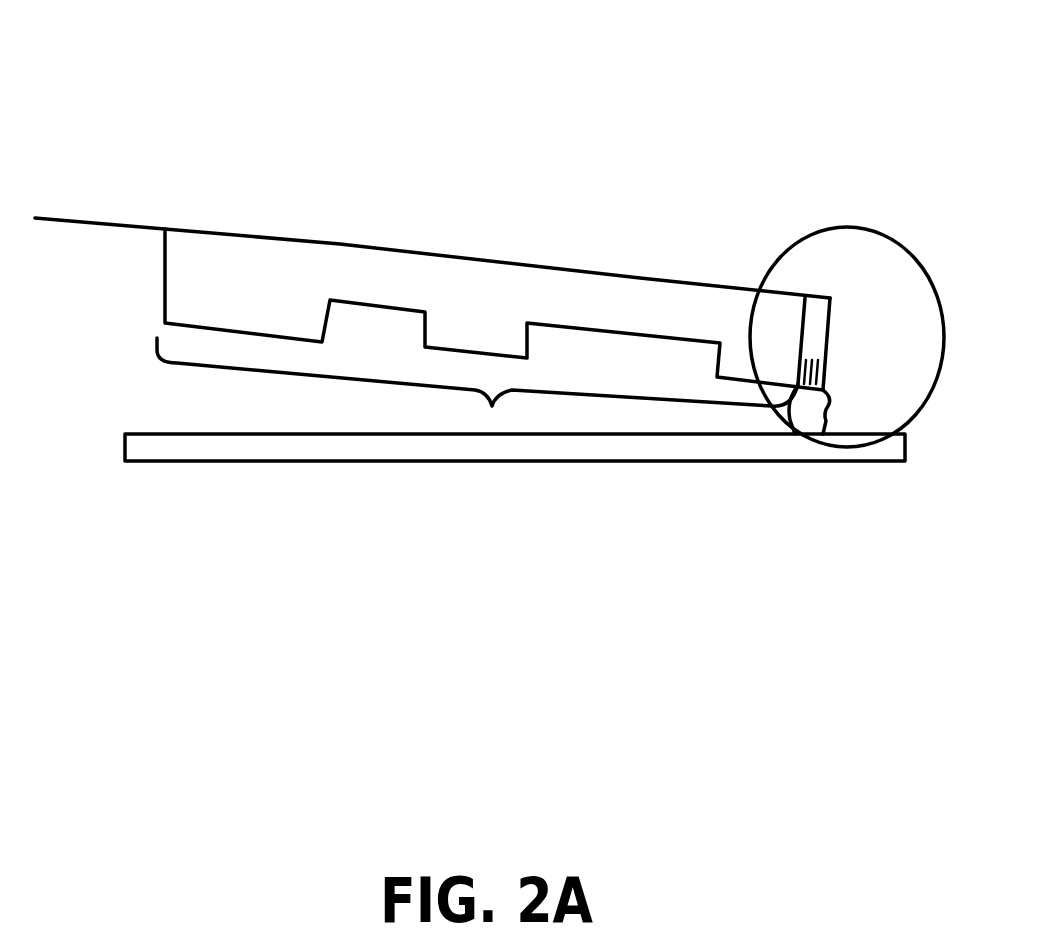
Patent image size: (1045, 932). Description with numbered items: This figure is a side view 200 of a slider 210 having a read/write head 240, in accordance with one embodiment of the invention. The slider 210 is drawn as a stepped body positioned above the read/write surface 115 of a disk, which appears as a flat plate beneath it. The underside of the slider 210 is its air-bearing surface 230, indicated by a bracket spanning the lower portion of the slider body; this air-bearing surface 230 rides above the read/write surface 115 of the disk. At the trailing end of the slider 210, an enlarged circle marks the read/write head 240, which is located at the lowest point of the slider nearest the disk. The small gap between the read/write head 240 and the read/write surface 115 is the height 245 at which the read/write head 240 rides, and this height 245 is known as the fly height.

The side view 200 is at (715, 50).
The slider 210 is at (337, 240).
The air-bearing surface 230 is at (492, 412).
The read/write head 240 is at (882, 277).
The height 245 is at (827, 402).
The read/write surface 115 is at (207, 434).